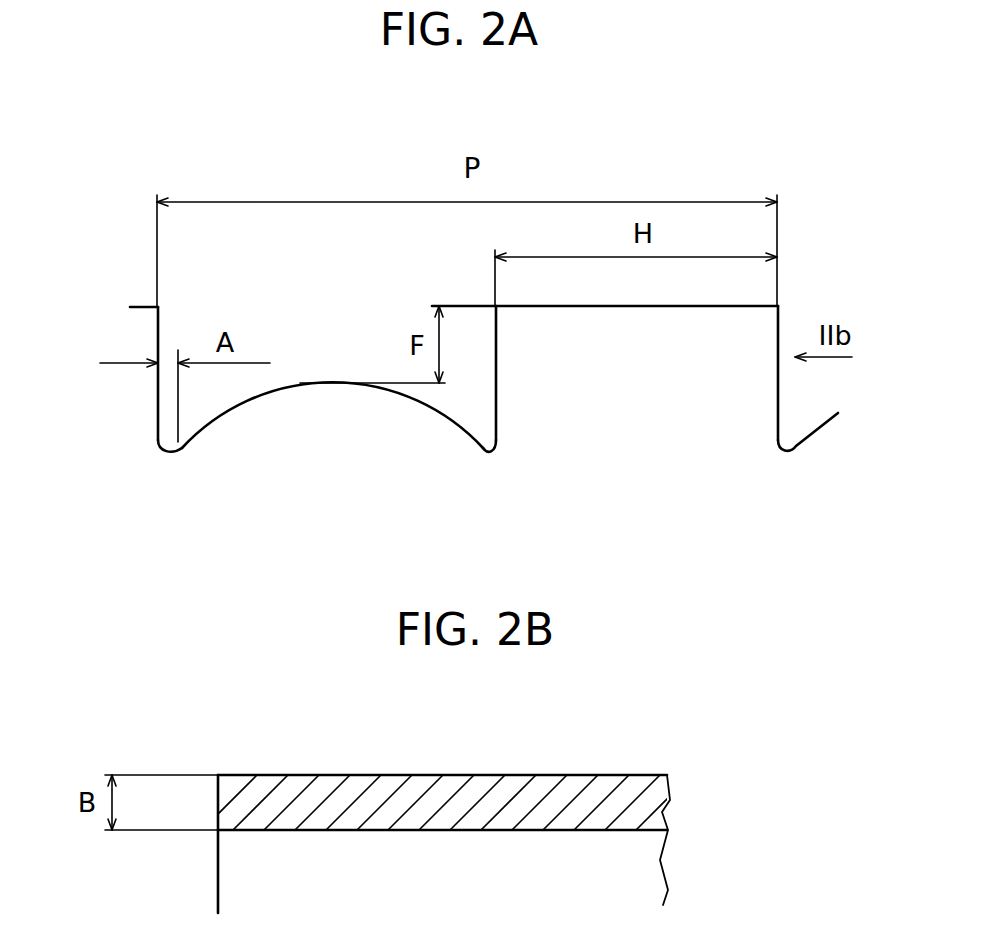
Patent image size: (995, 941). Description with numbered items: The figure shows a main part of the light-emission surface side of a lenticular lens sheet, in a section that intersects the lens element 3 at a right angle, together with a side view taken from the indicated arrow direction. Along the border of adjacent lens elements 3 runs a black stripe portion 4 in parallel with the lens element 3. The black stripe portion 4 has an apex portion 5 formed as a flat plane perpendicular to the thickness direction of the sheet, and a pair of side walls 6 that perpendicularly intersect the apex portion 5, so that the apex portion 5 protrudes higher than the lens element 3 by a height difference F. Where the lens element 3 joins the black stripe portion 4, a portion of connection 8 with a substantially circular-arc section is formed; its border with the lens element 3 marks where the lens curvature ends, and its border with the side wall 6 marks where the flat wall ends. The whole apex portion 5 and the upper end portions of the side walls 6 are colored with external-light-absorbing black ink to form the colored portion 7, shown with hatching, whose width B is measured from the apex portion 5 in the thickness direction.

In FIG. 2A, the lens element 3 is at (300, 383).
In FIG. 2A, the black stripe portion 4 is at (168, 302).
In FIG. 2B, the black stripe portion 4 is at (485, 768).
In FIG. 2A, the apex portion 5 is at (137, 307).
In FIG. 2B, the apex portion 5 is at (268, 775).
In FIG. 2A, the side wall 6 is at (160, 332).
In FIG. 2B, the side wall 6 is at (575, 885).
In FIG. 2B, the colored portion 7 is at (381, 795).
In FIG. 2A, the portion of connection 8 is at (160, 432).